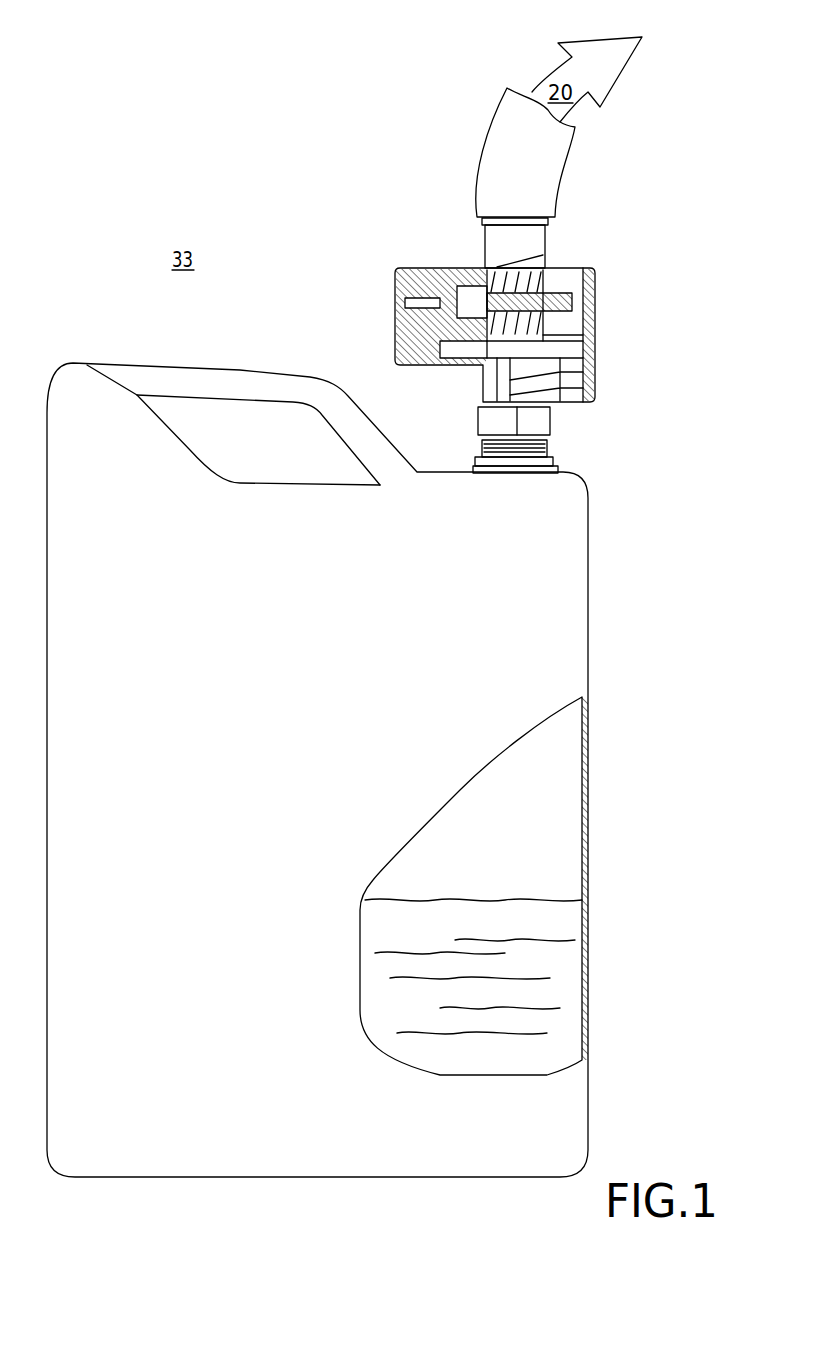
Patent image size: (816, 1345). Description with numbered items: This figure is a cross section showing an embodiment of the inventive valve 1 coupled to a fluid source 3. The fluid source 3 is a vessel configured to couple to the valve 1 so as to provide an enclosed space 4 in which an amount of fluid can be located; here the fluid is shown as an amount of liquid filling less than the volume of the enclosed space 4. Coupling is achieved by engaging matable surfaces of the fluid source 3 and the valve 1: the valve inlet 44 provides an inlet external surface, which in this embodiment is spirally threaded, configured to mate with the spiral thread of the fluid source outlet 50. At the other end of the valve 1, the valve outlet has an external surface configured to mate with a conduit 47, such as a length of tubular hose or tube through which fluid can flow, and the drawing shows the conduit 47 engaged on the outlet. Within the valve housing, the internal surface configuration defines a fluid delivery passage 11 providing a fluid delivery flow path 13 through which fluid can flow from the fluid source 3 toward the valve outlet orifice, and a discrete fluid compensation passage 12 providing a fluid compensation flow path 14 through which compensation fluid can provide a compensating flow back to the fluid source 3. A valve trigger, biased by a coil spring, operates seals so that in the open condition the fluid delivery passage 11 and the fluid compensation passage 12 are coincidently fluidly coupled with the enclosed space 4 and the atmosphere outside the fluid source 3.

The valve 1 is at (608, 180).
The fluid source 3 is at (596, 512).
The enclosed space 4 is at (558, 756).
The fluid delivery passage 11 is at (573, 329).
The fluid compensation passage 12 is at (504, 363).
The fluid delivery flow path 13 is at (548, 343).
The fluid compensation flow path 14 is at (504, 385).
The valve inlet 44 is at (456, 448).
The conduit 47 is at (511, 147).
The fluid source outlet 50 is at (562, 450).